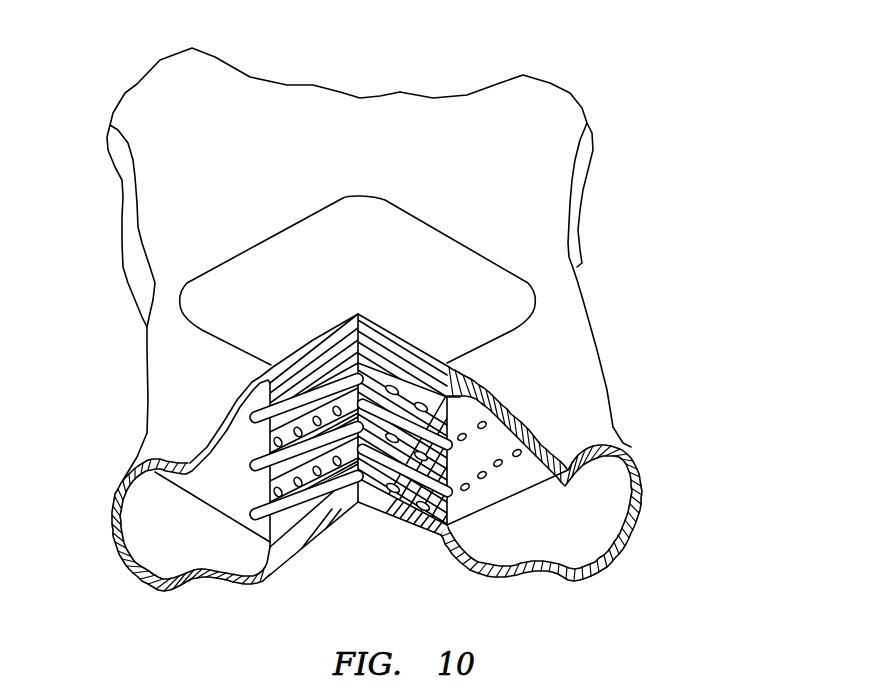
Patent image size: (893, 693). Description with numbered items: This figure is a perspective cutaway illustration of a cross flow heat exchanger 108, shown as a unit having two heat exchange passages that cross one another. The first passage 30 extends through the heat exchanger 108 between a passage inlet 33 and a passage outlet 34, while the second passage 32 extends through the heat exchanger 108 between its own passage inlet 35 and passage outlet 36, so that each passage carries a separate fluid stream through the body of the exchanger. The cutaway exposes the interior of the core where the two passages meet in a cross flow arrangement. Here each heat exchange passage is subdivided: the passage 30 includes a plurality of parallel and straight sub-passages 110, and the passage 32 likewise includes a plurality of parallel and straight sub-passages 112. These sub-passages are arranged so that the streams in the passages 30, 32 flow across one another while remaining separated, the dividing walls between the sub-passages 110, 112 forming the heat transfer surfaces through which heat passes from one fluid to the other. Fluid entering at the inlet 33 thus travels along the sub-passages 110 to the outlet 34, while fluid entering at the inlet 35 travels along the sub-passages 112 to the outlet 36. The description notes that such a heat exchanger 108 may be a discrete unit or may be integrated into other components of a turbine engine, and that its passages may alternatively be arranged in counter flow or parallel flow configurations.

The first passage 30 is at (547, 523).
The second passage 32 is at (192, 547).
The passage inlet 33 is at (620, 533).
The passage outlet 34 is at (136, 88).
The passage inlet 35 is at (133, 463).
The passage outlet 36 is at (570, 92).
The heat exchanger 108 is at (504, 338).
The sub-passages 110 is at (481, 428).
The sub-passages 112 is at (303, 502).